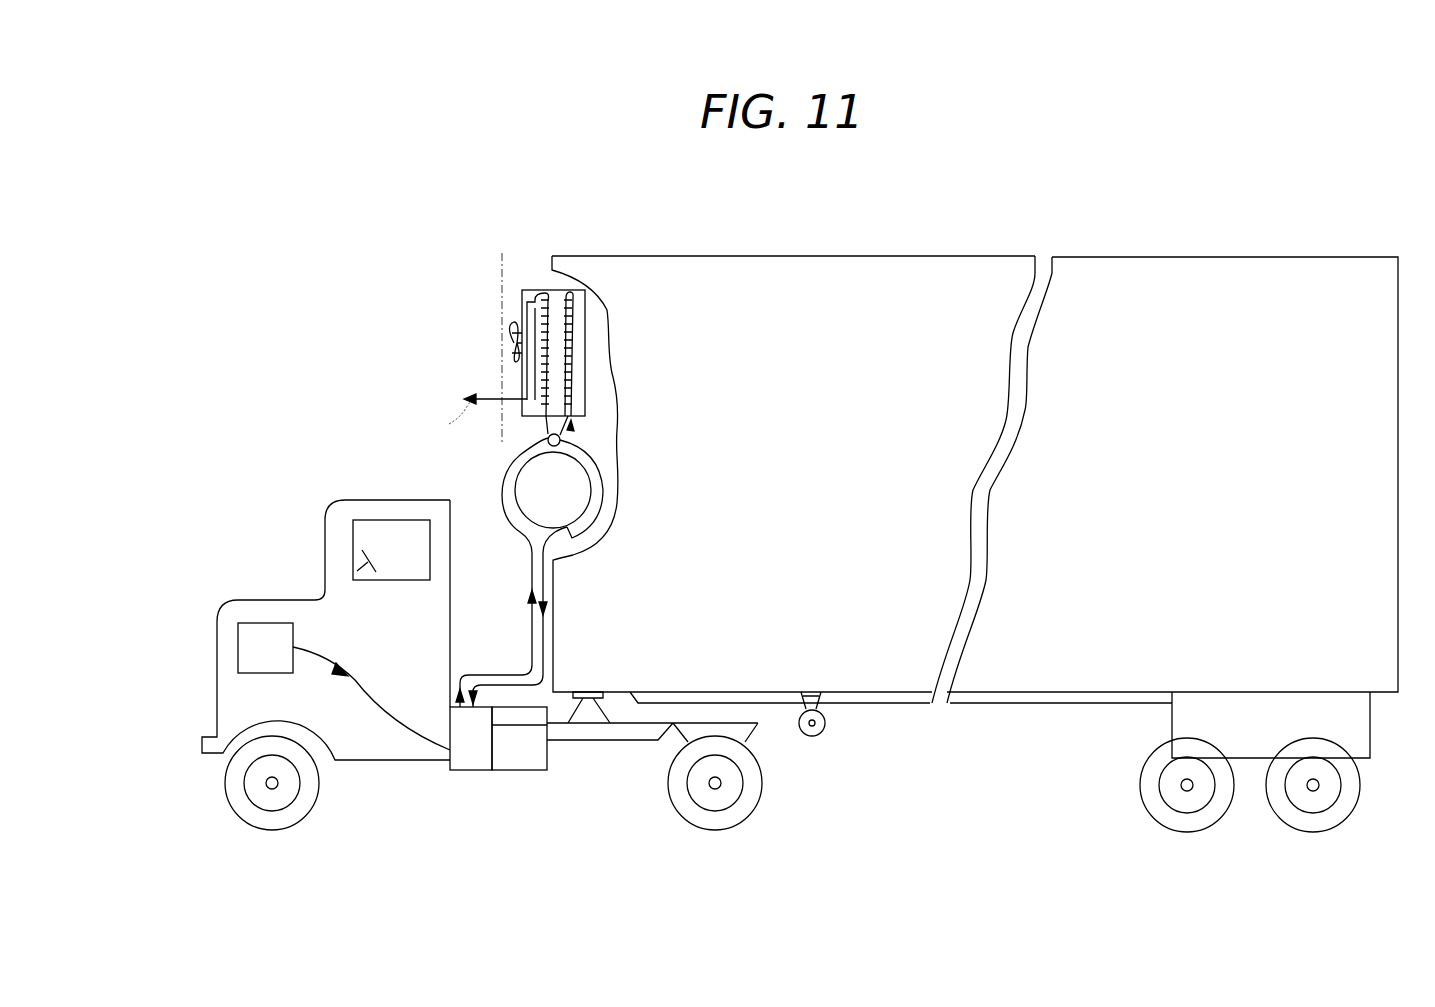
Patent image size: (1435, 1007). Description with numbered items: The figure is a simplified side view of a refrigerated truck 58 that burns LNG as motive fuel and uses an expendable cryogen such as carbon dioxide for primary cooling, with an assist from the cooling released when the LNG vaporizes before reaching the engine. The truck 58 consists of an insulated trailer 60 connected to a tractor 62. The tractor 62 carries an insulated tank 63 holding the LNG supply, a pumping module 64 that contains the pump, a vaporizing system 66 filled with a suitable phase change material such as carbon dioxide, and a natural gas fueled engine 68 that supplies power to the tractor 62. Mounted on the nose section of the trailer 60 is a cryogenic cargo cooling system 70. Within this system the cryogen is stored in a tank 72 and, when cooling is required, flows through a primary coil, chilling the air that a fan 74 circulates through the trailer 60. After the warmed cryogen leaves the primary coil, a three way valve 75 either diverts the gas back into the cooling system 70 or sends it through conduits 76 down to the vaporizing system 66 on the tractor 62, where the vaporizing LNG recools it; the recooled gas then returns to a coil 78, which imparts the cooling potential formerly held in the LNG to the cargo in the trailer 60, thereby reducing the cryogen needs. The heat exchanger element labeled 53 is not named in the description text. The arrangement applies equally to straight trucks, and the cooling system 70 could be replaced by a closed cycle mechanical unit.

The refrigerated truck 58 is at (975, 508).
The insulated trailer 60 is at (718, 248).
The tractor 62 is at (376, 763).
The insulated tank 63 is at (535, 770).
The pumping module 64 is at (528, 717).
The vaporizing system 66 is at (455, 770).
The natural gas fueled engine 68 is at (278, 661).
The cryogenic cargo cooling system 70 is at (513, 250).
The tank 72 is at (524, 490).
The fan 74 is at (512, 335).
The three way valve 75 is at (561, 441).
The conduits 76 is at (533, 655).
The coil 78 is at (527, 300).
The heat exchanger 53 is at (573, 292).